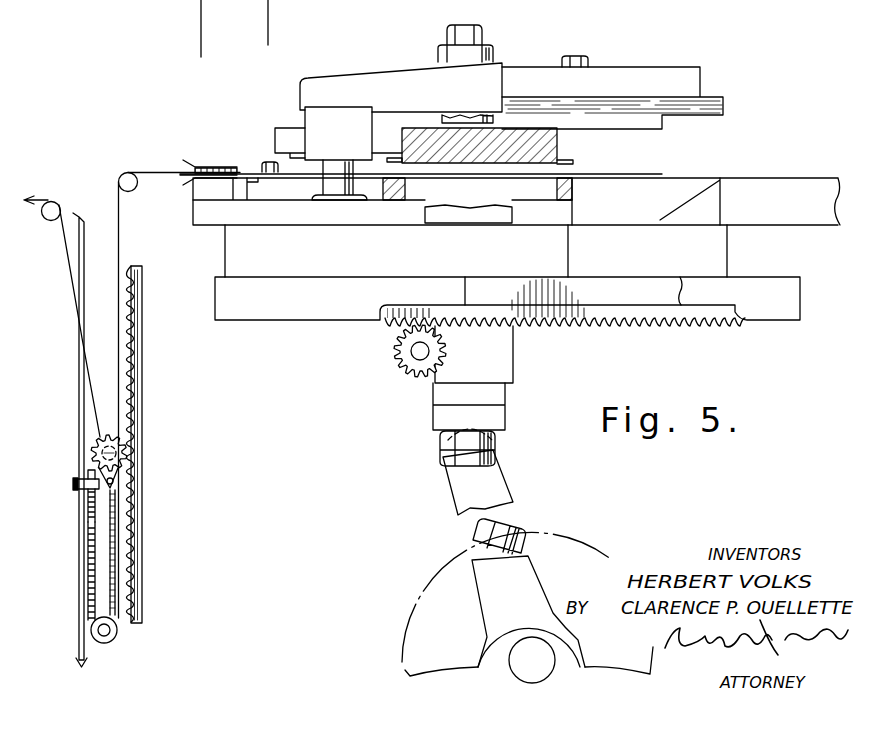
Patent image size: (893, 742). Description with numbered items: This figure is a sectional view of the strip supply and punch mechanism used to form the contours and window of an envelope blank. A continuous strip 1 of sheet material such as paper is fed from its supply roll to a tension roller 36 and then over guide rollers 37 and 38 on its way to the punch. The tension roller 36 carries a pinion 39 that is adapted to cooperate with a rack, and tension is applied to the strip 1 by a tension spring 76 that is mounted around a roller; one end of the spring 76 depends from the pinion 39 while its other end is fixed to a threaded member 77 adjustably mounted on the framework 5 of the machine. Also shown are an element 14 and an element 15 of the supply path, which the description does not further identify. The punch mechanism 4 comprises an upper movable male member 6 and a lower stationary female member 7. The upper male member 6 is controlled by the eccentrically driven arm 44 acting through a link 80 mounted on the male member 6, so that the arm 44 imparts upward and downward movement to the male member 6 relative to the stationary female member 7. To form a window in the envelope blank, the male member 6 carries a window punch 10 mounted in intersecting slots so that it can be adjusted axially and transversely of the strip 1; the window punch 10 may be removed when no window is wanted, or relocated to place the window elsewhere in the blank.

The continuous strip 1 is at (70, 268).
The punch mechanism 4 is at (737, 32).
The framework 5 is at (86, 478).
The upper movable male member 6 is at (493, 67).
The lower stationary female member 7 is at (277, 270).
The window punch 10 is at (527, 132).
The rack 14 is at (135, 360).
The lower pulley 15 is at (108, 634).
The tension roller 36 is at (130, 452).
The guide roller 37 is at (58, 204).
The guide roller 38 is at (133, 180).
The pinion 39 is at (108, 434).
The eccentrically driven arm 44 is at (497, 487).
The tension spring 76 is at (88, 582).
The threaded member 77 is at (84, 508).
The link 80 is at (503, 355).